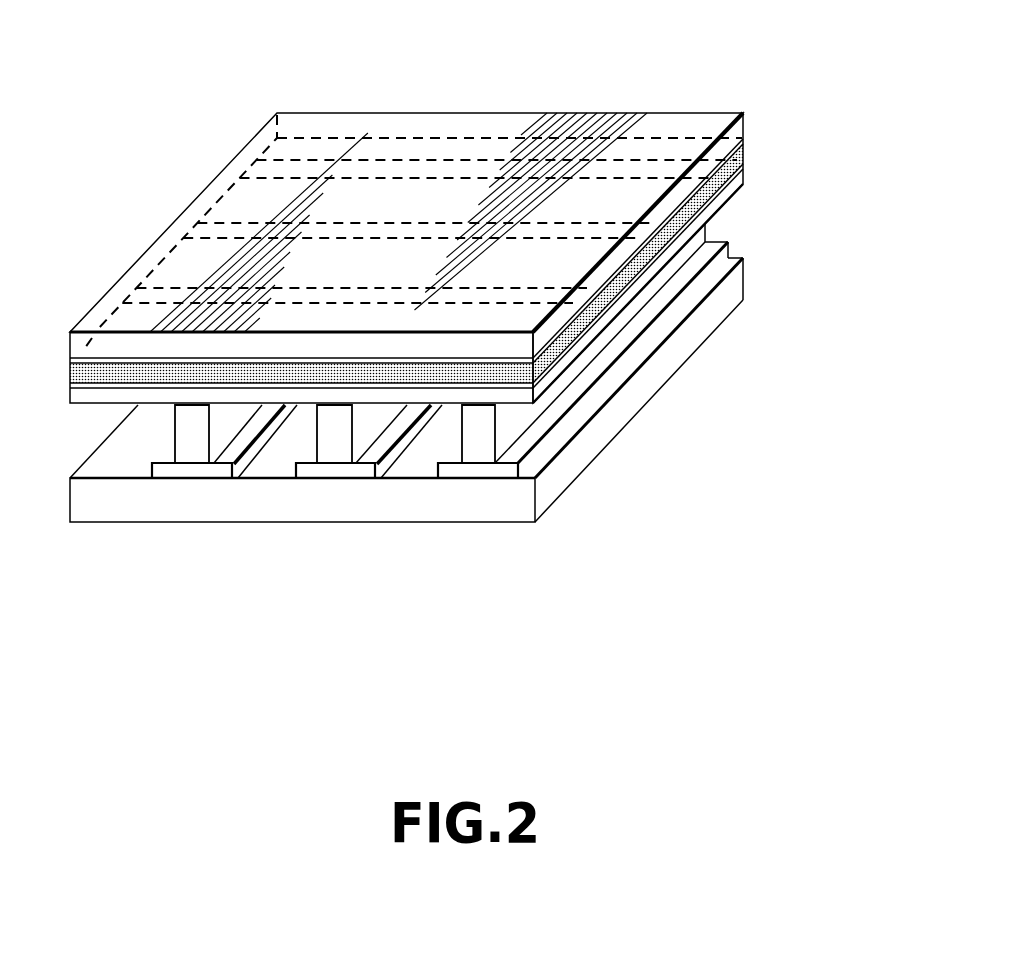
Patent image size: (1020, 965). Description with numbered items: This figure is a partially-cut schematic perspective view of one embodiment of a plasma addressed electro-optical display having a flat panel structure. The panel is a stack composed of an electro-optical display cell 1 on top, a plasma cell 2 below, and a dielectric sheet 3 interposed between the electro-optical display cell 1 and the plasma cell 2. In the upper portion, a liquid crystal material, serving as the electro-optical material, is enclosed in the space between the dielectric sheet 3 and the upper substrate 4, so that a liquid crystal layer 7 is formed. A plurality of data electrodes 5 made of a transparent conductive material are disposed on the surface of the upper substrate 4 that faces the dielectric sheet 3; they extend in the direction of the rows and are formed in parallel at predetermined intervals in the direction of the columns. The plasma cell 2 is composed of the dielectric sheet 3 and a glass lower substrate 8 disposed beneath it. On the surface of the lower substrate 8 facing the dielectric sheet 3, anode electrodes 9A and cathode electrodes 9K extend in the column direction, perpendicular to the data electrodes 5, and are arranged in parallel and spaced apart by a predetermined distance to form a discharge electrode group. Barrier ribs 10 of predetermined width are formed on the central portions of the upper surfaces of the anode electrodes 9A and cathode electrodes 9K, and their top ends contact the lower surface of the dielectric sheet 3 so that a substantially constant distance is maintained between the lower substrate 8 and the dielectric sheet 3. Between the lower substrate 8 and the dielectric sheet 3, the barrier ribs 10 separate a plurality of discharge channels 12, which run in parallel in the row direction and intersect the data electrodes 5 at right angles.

The electro-optical display cell 1 is at (474, 205).
The plasma cell 2 is at (465, 450).
The dielectric sheet 3 is at (732, 188).
The upper substrate 4 is at (345, 127).
The data electrodes 5 is at (720, 167).
The liquid crystal layer 7 is at (741, 160).
The lower substrate 8 is at (573, 455).
The anode electrodes 9A is at (188, 465).
The cathode electrodes 9K is at (347, 470).
The barrier ribs 10 is at (185, 420).
The discharge channels 12 is at (288, 442).